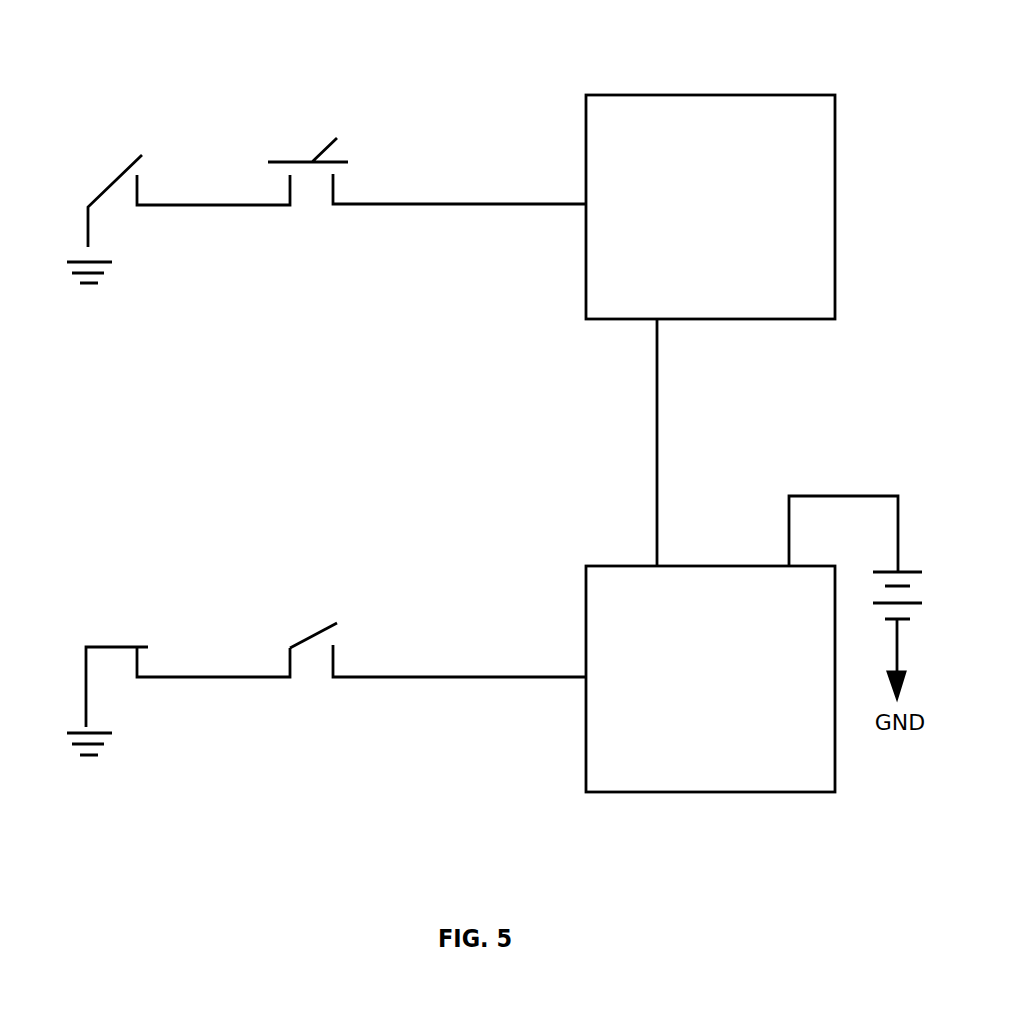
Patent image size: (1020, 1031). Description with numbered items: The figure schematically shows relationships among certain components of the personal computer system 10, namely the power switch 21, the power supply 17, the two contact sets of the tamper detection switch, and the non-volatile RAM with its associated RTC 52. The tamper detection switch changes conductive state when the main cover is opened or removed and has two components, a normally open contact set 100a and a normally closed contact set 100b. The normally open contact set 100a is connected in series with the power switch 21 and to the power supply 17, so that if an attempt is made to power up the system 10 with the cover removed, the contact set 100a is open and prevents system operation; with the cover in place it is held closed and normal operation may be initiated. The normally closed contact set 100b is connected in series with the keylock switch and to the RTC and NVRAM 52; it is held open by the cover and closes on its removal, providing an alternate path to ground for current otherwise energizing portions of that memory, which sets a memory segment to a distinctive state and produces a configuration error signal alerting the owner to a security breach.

The power switch 21 is at (123, 173).
The normally open contact set 100a is at (323, 138).
The power supply 17 is at (712, 95).
The system 10 is at (105, 647).
The normally closed contact set 100b is at (323, 633).
The non-volatile RAM and associated RTC 52 is at (618, 564).